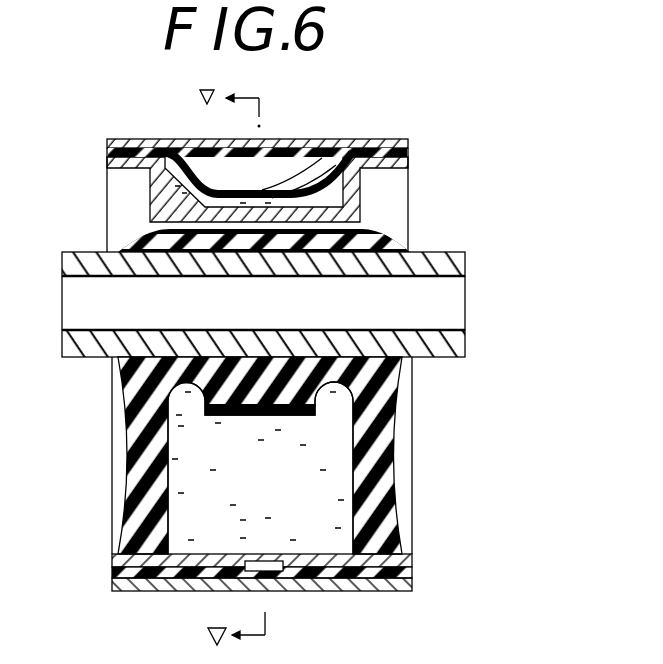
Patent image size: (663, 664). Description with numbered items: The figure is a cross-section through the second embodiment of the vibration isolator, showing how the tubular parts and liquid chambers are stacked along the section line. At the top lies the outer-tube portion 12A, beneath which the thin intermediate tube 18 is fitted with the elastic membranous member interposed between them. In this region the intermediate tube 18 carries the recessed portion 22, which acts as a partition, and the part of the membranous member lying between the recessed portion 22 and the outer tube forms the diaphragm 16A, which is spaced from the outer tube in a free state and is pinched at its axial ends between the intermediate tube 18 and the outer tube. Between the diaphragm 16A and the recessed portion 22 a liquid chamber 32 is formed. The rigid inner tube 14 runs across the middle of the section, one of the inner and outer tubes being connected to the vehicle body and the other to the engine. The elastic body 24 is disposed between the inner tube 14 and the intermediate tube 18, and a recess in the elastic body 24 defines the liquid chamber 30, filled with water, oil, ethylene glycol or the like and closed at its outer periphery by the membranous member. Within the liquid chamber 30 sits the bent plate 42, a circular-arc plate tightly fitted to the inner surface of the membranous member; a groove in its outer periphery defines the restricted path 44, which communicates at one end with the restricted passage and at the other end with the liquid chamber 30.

The diaphragm 12A is at (180, 150).
The diaphragm 16A is at (268, 150).
The intermediate tube 18 is at (410, 158).
The recessed portion 22 is at (225, 192).
The liquid chamber 32 is at (322, 176).
The inner tube 14 is at (430, 252).
The elastic body 24 is at (388, 443).
The liquid chamber 30 is at (282, 496).
The bent plate 42 is at (206, 554).
The restricted path 44 is at (262, 575).